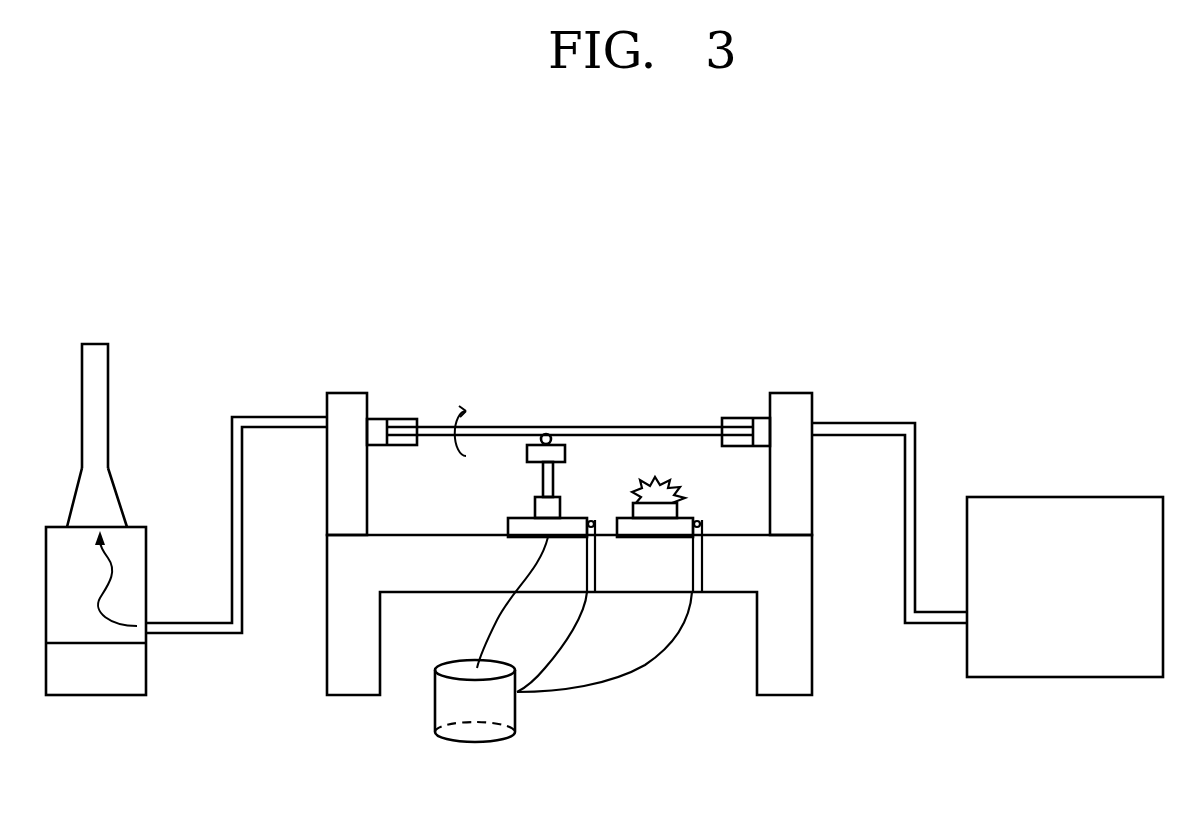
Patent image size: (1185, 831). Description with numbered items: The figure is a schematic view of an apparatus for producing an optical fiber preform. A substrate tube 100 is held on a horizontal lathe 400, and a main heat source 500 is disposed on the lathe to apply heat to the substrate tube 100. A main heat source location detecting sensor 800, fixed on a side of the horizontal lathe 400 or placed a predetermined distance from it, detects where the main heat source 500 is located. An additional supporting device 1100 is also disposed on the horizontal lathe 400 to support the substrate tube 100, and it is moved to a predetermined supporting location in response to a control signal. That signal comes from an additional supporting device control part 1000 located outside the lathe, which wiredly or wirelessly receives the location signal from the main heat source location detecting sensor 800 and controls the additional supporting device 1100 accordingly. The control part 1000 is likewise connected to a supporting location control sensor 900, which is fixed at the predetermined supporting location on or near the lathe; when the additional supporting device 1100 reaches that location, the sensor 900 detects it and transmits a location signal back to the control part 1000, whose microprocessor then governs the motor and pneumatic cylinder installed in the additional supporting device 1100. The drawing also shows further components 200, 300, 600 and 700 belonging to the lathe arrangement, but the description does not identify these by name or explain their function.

The substrate tube 100 is at (440, 432).
The second chuck 200 is at (740, 418).
The chuck support pillar 300 is at (813, 406).
The horizontal lathe 400 is at (788, 673).
The main heat source 500 is at (668, 515).
The chemical raw material supply (SiCl4, GeCl4, POCl3) 600 is at (1002, 508).
The gas supply container 700 is at (75, 675).
The main heat source location detecting sensor 800 is at (703, 520).
The supporting location control sensor 900 is at (591, 520).
The additional supporting device control part 1000 is at (445, 710).
The additional supporting device 1100 is at (541, 452).